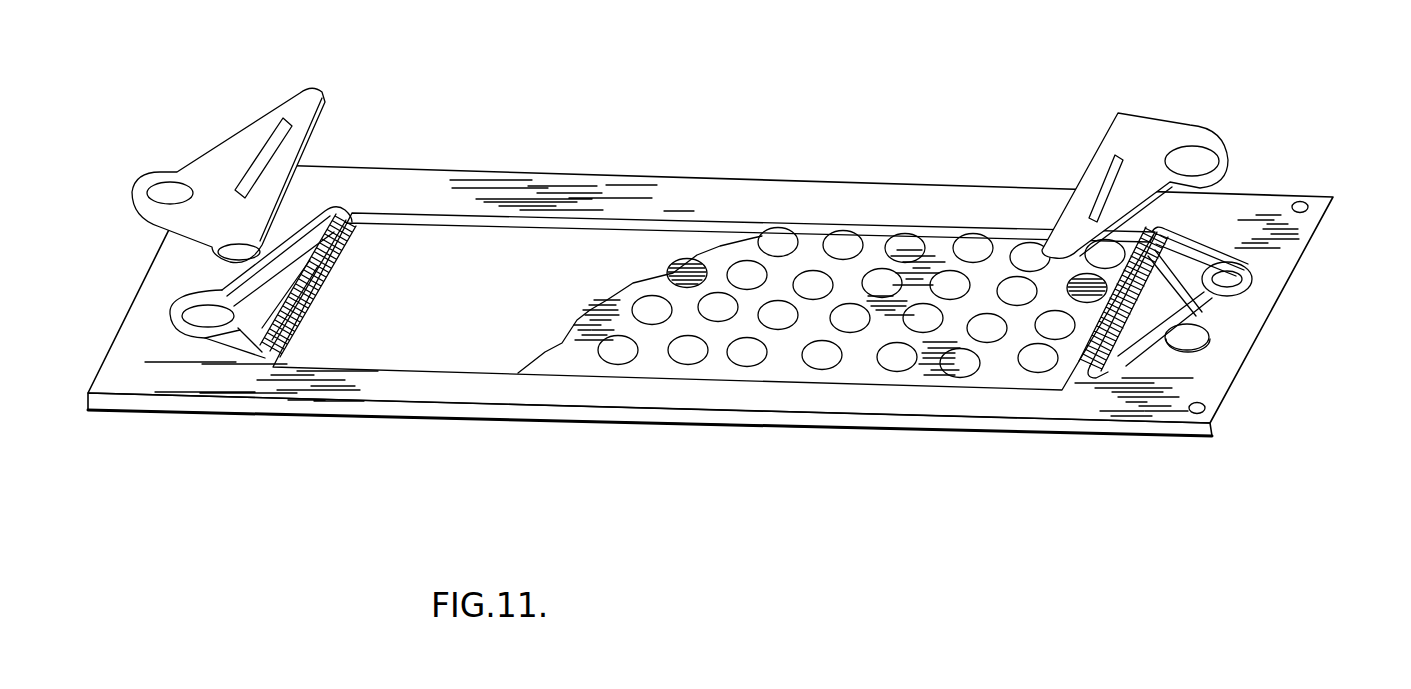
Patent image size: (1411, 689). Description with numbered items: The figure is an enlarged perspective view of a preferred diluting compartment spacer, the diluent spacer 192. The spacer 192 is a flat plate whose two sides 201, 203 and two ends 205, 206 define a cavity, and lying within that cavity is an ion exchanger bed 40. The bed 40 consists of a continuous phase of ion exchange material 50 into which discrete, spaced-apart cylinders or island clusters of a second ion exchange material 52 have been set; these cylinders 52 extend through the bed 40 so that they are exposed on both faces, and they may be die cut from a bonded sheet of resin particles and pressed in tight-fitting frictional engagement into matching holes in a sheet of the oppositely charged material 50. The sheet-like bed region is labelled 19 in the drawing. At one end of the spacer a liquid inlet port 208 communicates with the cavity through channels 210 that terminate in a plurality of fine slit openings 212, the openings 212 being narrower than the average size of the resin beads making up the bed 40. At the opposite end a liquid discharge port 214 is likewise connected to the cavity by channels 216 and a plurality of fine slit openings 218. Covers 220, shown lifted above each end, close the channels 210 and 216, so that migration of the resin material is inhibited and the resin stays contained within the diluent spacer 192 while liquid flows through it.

The sample sheet 19 is at (487, 294).
The ion exchanger bed 40 is at (805, 245).
The continuous phase of ion exchange material 50 is at (878, 236).
The cylinders or island clusters of second ion exchange material 52 is at (975, 247).
The diluent spacer 192 is at (851, 446).
The side 201 is at (693, 180).
The side 203 is at (757, 398).
The end 205 is at (1227, 353).
The end 206 is at (147, 327).
The liquid inlet port 208 is at (183, 290).
The channels 210 is at (325, 205).
The fine slit openings 212 is at (307, 320).
The liquid discharge port 214 is at (1252, 281).
The channels 216 is at (1185, 276).
The fine slit openings 218 is at (1057, 392).
The covers 220 is at (228, 155).